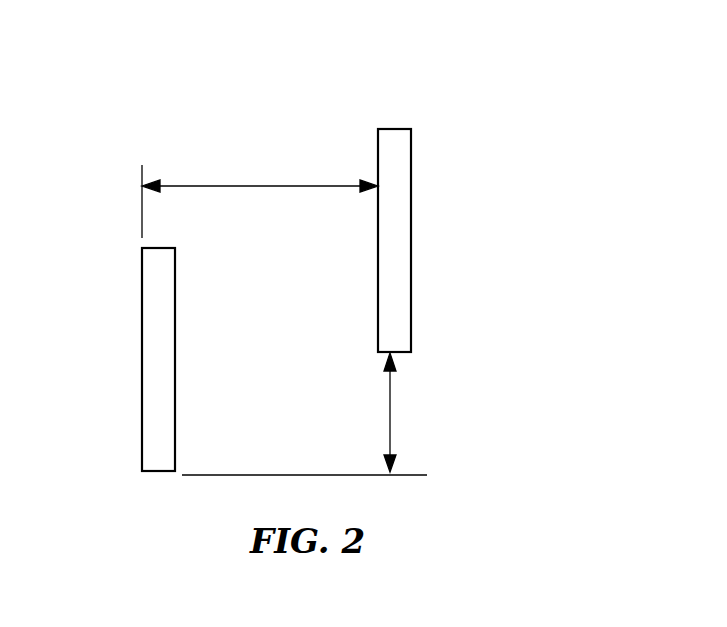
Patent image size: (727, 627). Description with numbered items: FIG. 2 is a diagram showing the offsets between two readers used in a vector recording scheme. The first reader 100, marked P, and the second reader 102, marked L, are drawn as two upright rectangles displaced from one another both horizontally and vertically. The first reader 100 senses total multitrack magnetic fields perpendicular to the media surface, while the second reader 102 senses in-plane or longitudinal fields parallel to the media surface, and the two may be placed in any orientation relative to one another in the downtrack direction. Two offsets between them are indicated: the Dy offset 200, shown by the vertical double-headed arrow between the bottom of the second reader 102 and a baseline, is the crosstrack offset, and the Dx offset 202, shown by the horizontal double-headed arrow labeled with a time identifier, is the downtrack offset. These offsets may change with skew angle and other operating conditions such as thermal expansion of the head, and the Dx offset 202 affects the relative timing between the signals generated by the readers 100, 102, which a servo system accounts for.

The first reader 100 is at (140, 292).
The second reader 102 is at (400, 133).
The Dy offset 200 is at (390, 407).
The Dx offset 202 is at (240, 187).